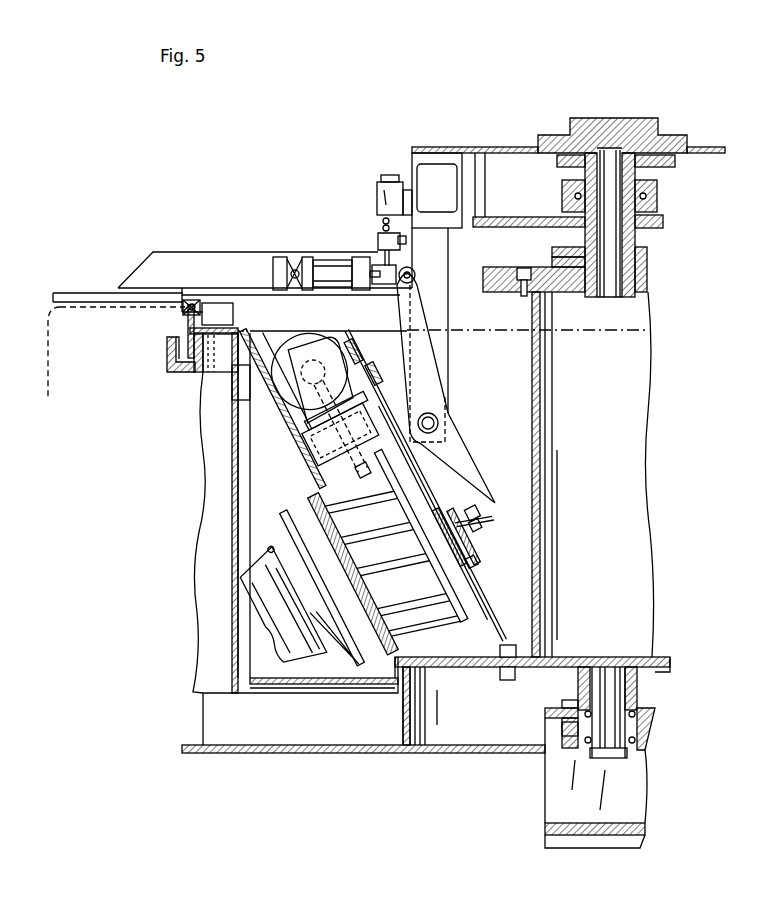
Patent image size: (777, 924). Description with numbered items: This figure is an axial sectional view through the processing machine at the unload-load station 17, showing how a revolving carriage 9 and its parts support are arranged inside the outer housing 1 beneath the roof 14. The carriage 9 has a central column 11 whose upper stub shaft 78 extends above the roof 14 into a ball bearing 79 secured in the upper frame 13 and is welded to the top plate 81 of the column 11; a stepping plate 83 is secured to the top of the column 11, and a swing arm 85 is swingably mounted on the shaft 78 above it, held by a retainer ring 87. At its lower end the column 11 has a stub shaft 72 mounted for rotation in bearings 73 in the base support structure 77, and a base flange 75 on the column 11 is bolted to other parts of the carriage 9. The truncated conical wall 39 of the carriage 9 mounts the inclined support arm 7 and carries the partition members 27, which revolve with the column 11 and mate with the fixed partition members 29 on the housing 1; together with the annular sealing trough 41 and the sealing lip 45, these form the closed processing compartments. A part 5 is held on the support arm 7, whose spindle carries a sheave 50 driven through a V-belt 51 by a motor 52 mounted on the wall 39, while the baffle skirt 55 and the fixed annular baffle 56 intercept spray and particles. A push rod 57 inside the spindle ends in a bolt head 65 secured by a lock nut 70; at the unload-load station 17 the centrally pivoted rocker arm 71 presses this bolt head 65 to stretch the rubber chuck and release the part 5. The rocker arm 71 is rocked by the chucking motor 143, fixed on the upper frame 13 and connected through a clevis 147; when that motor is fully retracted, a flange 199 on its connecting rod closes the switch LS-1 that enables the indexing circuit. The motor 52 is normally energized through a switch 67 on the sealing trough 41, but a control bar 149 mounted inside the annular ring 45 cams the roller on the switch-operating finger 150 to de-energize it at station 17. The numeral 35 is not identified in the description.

The housing 1 is at (48, 360).
The part 5 is at (266, 615).
The support arm 7 is at (367, 563).
The revolving carriage 9 is at (508, 441).
The central column 11 is at (612, 534).
The frame 13 is at (488, 148).
The roof 14 is at (76, 293).
The unload-load station 17 is at (270, 485).
The partition member 27 is at (320, 682).
The partition member 29 is at (200, 548).
The wall liner 35 is at (234, 660).
The wall 39 is at (301, 399).
The annular sealing trough 41 is at (172, 374).
The sealing lip 45 is at (188, 325).
The sheave 50 is at (479, 570).
The V-belt 51 is at (432, 481).
The motor 52 is at (331, 390).
The baffle skirt 55 is at (304, 582).
The fixed annular baffle 56 is at (333, 568).
The push rod 57 is at (472, 520).
The bolt head 65 is at (492, 523).
The switch 67 is at (233, 316).
The lock nut 70 is at (486, 534).
The rocker arm 71 is at (435, 402).
The stub shaft 72 is at (606, 748).
The bearings 73 is at (639, 712).
The base flange 75 is at (500, 668).
The base support structure 77 is at (551, 778).
The stub shaft 78 is at (614, 292).
The ball bearing 79 is at (655, 194).
The top plate 81 is at (647, 284).
The stepping plate 83 is at (500, 286).
The swing arm 85 is at (549, 264).
The retainer ring 87 is at (553, 252).
The chucking motor 143 is at (332, 262).
The clevis 147 is at (414, 274).
The control bar 149 is at (182, 312).
The switch-operating finger 150 is at (194, 301).
The flange 199 is at (380, 240).
The switch LS-1 is at (378, 185).